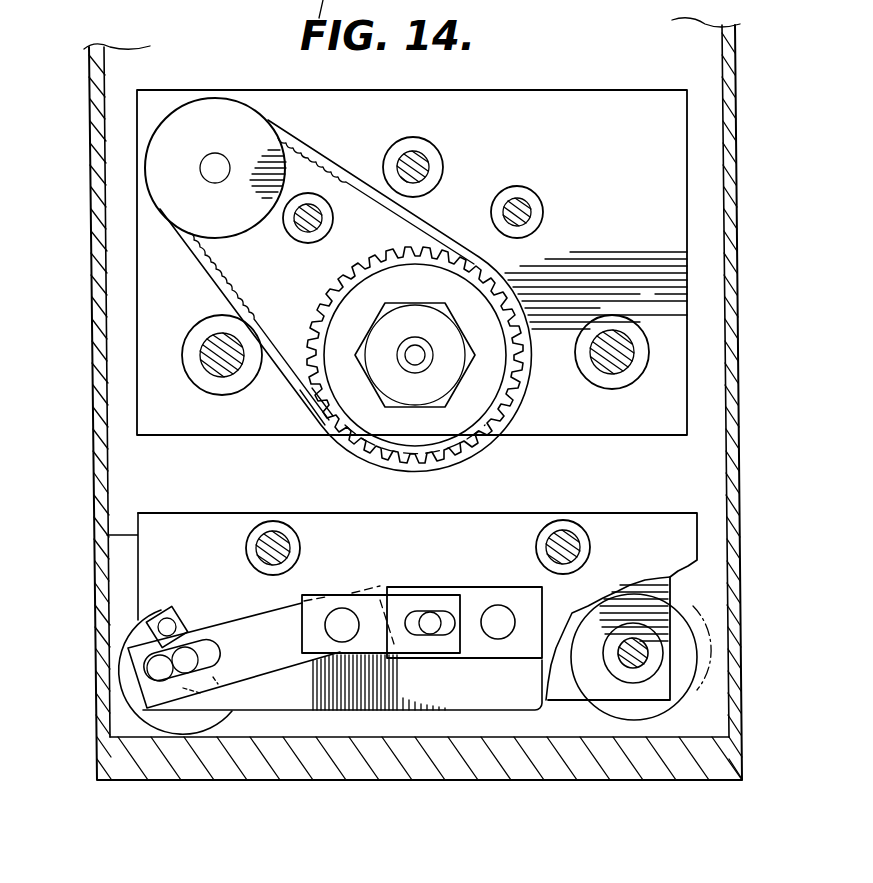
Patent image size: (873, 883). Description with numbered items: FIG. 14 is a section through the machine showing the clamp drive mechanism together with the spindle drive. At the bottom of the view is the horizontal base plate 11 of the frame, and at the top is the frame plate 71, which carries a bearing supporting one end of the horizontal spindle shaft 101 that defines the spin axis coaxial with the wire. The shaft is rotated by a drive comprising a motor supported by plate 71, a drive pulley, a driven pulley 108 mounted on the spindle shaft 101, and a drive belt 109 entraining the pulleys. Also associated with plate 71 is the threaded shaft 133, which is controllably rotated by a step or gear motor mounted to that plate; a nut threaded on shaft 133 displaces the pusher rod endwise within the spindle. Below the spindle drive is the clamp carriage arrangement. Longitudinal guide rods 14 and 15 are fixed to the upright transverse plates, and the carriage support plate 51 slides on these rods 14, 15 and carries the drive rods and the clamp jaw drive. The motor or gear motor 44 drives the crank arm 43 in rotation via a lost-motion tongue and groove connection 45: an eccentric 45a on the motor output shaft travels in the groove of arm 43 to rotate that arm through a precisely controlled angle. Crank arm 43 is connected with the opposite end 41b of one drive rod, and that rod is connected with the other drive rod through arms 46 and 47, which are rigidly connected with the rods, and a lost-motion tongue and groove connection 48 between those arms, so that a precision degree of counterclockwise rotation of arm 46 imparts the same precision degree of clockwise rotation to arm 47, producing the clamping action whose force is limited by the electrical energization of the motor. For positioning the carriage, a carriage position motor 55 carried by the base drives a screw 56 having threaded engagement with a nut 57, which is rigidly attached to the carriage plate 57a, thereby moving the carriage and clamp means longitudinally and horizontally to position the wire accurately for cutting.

The base plate 11 is at (347, 760).
The plate 71 is at (600, 100).
The threaded shaft 133 is at (406, 153).
The driven pulley 108 is at (325, 300).
The horizontal shaft 101 is at (415, 350).
The drive belt 109 is at (287, 378).
The carriage support plate 51 is at (102, 532).
The guide rod 15 is at (275, 540).
The guide rod 14 is at (572, 530).
The crank arm 43 is at (268, 655).
The motor 44 is at (113, 647).
The lost-motion tongue and groove connection 45 is at (147, 676).
The eccentric 45a is at (183, 672).
The arm 46 is at (355, 605).
The opposite end of rod 41 41b is at (340, 617).
The arm 47 is at (482, 645).
The lost-motion tongue and groove connection 48 is at (432, 618).
The carriage plate 57a is at (600, 688).
The nut 57 is at (650, 680).
The screw 56 is at (650, 655).
The carriage position motor 55 is at (693, 606).